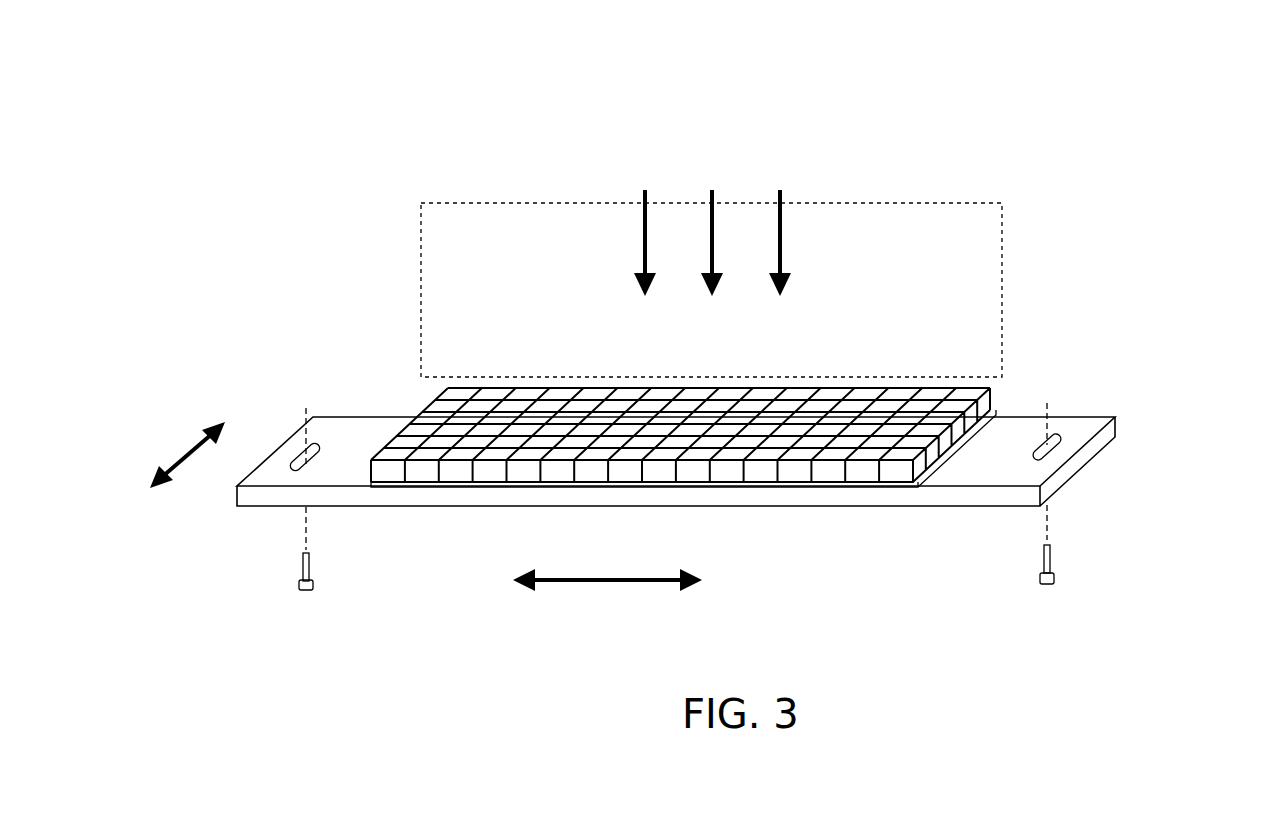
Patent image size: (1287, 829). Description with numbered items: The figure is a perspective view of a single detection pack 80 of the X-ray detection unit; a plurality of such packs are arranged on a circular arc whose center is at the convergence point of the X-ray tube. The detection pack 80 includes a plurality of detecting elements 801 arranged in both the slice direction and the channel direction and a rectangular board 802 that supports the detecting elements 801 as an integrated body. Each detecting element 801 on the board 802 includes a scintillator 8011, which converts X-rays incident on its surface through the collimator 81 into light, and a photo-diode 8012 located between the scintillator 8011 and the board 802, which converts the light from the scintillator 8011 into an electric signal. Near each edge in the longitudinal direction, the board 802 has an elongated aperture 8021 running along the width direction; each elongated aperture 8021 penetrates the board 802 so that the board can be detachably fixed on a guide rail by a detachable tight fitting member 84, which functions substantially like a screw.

The detection pack 80 is at (688, 104).
The collimator 81 is at (421, 243).
The detecting element 801 is at (1140, 266).
The scintillator 8011 is at (981, 394).
The photo-diode 8012 is at (1003, 415).
The rectangular board 802 is at (773, 495).
The elongated aperture 8021 is at (304, 452).
The detachable tight fitting member 84 is at (306, 592).